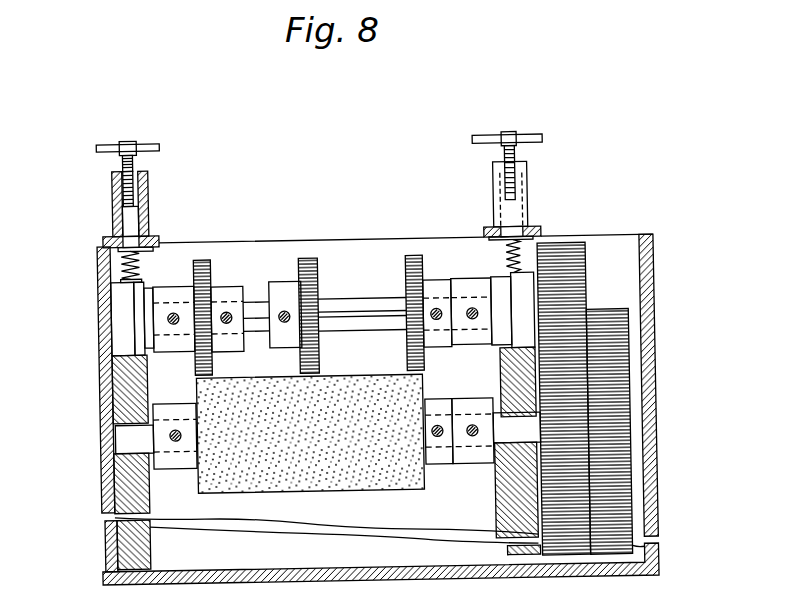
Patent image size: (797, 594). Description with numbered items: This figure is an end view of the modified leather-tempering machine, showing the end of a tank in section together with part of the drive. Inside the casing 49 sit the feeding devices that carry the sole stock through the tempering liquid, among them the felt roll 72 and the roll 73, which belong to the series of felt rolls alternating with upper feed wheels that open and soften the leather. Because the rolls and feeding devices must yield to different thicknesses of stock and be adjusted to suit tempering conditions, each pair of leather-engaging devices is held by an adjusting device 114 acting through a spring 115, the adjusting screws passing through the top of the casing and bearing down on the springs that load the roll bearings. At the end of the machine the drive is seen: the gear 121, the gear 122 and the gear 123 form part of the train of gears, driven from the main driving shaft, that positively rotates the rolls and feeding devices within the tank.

The casing 49 is at (350, 410).
The felt roll 72 is at (312, 493).
The felt roll 73 is at (305, 262).
The adjusting device 114 is at (131, 219).
The spring 115 is at (141, 266).
The gear 121 is at (626, 357).
The gear 122 is at (562, 431).
The gear 123 is at (627, 529).